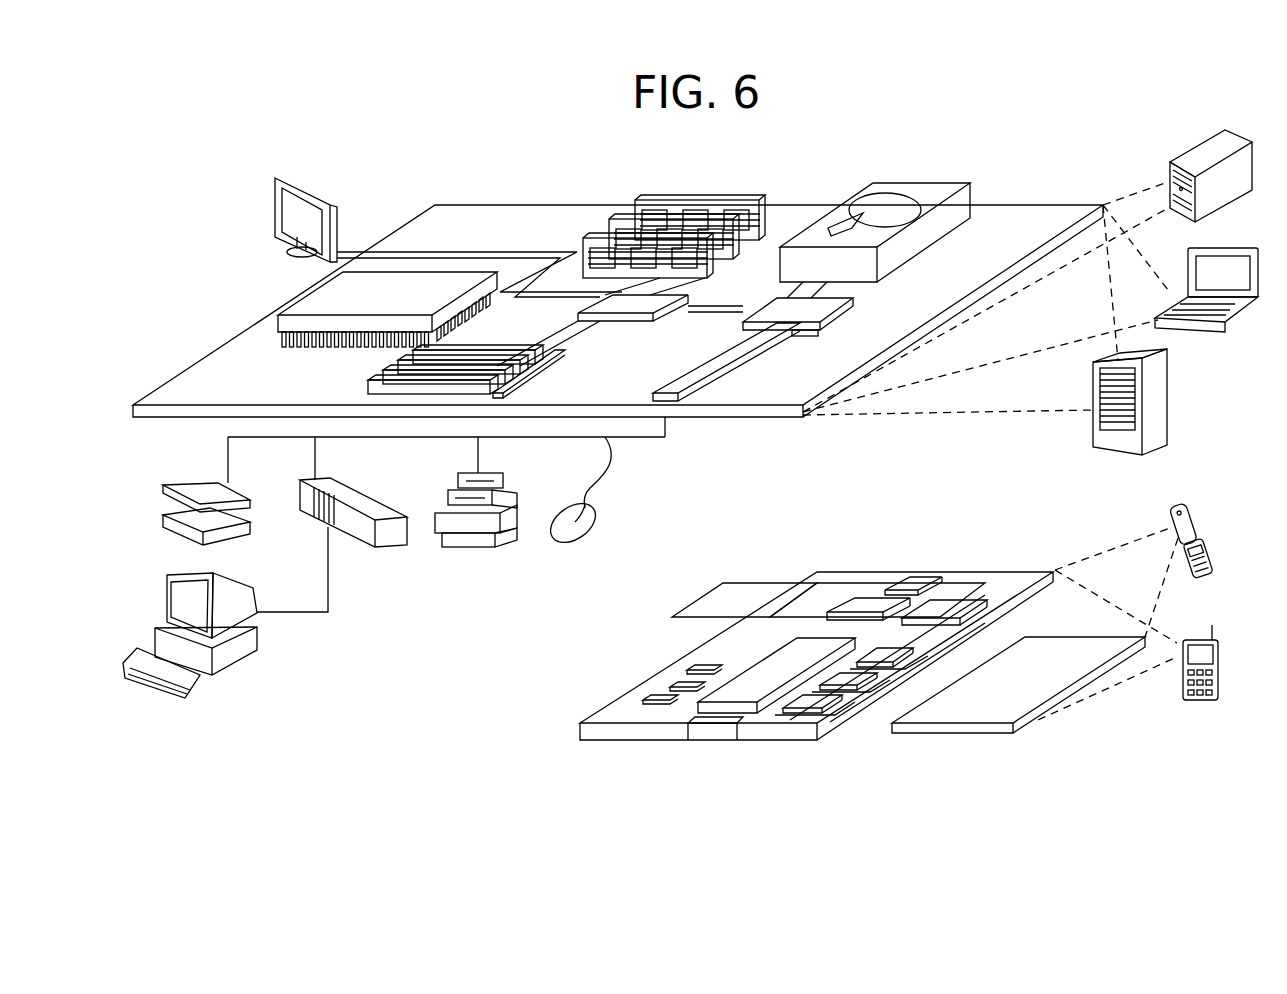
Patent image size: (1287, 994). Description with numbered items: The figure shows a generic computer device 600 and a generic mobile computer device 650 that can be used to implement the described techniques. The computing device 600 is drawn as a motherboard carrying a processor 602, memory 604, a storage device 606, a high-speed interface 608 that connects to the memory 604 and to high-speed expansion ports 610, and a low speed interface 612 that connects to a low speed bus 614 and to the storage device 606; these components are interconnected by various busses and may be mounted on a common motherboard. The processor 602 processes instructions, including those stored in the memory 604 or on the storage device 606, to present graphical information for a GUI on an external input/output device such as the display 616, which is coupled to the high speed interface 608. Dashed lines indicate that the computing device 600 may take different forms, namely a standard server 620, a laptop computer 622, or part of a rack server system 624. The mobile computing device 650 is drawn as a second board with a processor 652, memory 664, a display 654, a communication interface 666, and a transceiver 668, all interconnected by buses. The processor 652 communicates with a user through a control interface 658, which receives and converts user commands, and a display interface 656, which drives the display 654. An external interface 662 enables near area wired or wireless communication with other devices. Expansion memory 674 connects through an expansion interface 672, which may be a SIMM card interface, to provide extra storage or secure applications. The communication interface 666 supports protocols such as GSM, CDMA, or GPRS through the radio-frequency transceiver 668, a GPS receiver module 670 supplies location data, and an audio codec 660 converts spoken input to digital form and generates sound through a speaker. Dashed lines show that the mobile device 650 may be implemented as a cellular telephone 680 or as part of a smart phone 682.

The computing device 600 is at (392, 152).
The processor 602 is at (303, 300).
The memory 604 is at (708, 200).
The storage device 606 is at (915, 185).
The high-speed interface 608 is at (645, 318).
The high-speed expansion ports 610 is at (390, 370).
The low speed interface 612 is at (773, 310).
The low speed bus 614 is at (664, 392).
The display 616 is at (285, 176).
The standard server 620 is at (1188, 157).
The laptop computer 622 is at (1236, 247).
The rack server system 624 is at (1168, 404).
The mobile computer device 650 is at (535, 748).
The processor 652 is at (748, 680).
The display 654 is at (1048, 652).
The display interface 656 is at (832, 710).
The control interface 658 is at (858, 678).
The audio codec 660 is at (887, 650).
The external interface 662 is at (712, 730).
The memory 664 is at (668, 686).
The communication interface 666 is at (868, 604).
The transceiver 668 is at (953, 600).
The GPS receiver module 670 is at (914, 578).
The expansion interface 672 is at (802, 583).
The expansion memory 674 is at (723, 583).
The cellular telephone 680 is at (1187, 502).
The smart phone 682 is at (1196, 640).